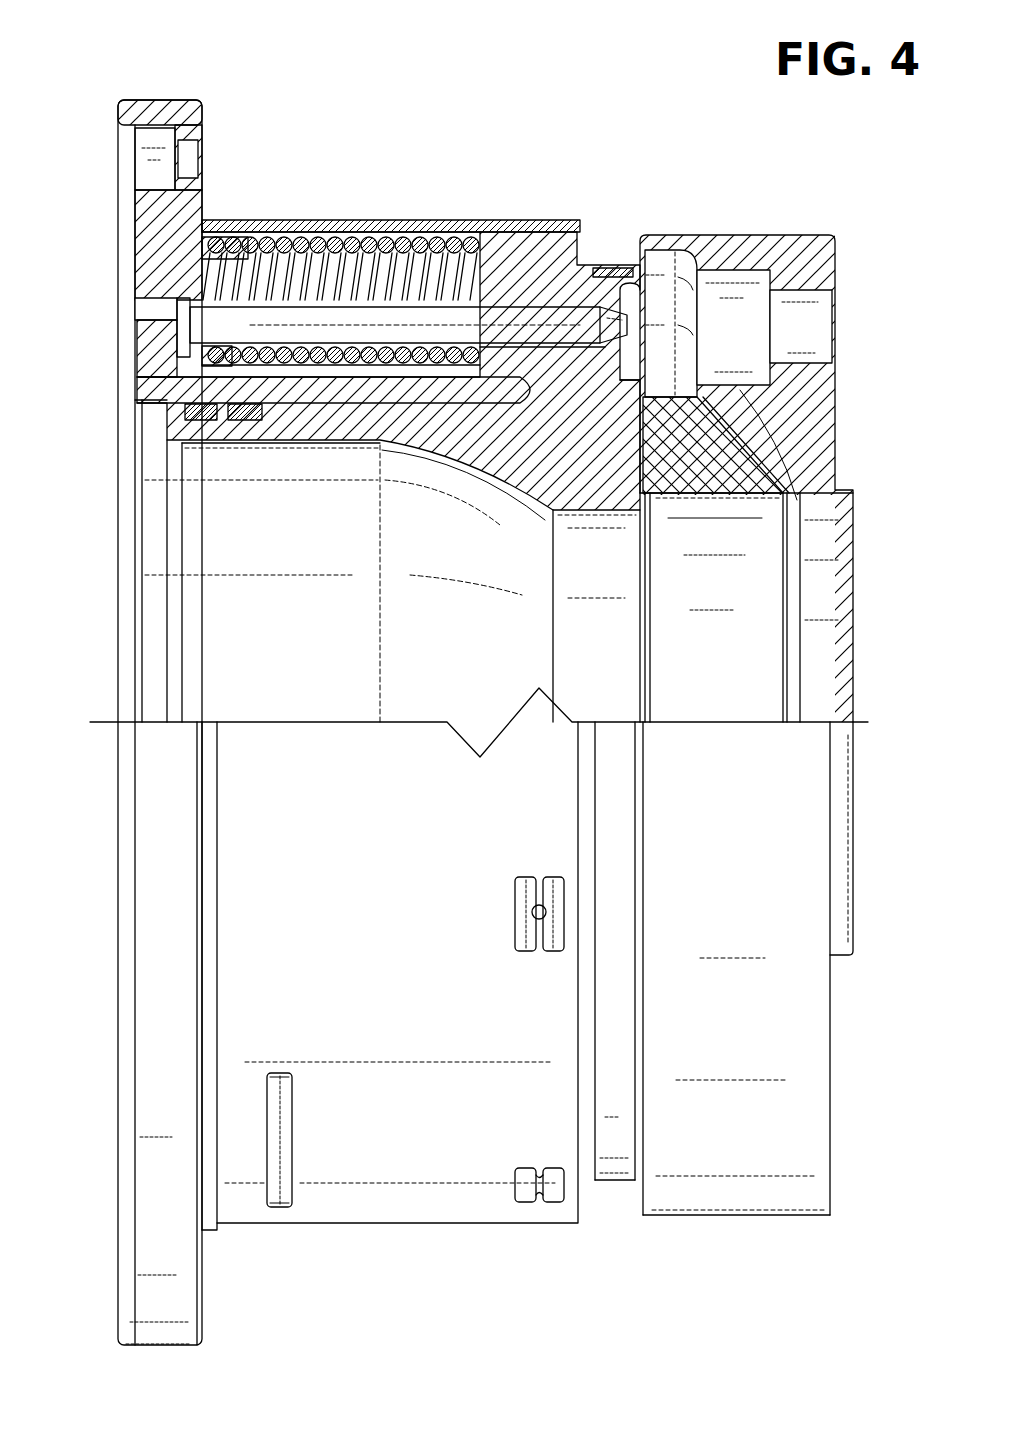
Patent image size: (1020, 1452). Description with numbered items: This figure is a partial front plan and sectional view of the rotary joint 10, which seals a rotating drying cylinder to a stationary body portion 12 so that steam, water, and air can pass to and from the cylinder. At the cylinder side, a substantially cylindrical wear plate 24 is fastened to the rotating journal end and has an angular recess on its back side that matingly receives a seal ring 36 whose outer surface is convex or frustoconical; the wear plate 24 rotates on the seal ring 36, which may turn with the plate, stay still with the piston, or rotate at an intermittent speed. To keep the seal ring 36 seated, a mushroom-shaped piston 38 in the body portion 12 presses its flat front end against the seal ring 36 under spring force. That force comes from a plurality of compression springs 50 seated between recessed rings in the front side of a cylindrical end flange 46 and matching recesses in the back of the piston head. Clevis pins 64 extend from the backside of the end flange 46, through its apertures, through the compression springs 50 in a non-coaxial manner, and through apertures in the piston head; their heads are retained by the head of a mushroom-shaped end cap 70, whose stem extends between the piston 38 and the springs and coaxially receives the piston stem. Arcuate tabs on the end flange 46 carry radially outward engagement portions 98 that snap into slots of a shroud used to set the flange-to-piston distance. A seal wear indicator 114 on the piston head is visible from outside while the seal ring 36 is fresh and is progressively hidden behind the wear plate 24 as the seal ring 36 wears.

The rotary joint 10 is at (787, 180).
The body portion 12 is at (642, 180).
The wear plate 24 is at (790, 238).
The seal ring 36 is at (728, 460).
The piston 38 is at (503, 245).
The end flange 46 is at (163, 100).
The compression springs 50 is at (388, 240).
The clevis pins 64 is at (213, 318).
The end cap 70 is at (118, 350).
The engagement portion 98 is at (278, 1192).
The seal wear indicator 114 is at (610, 1168).